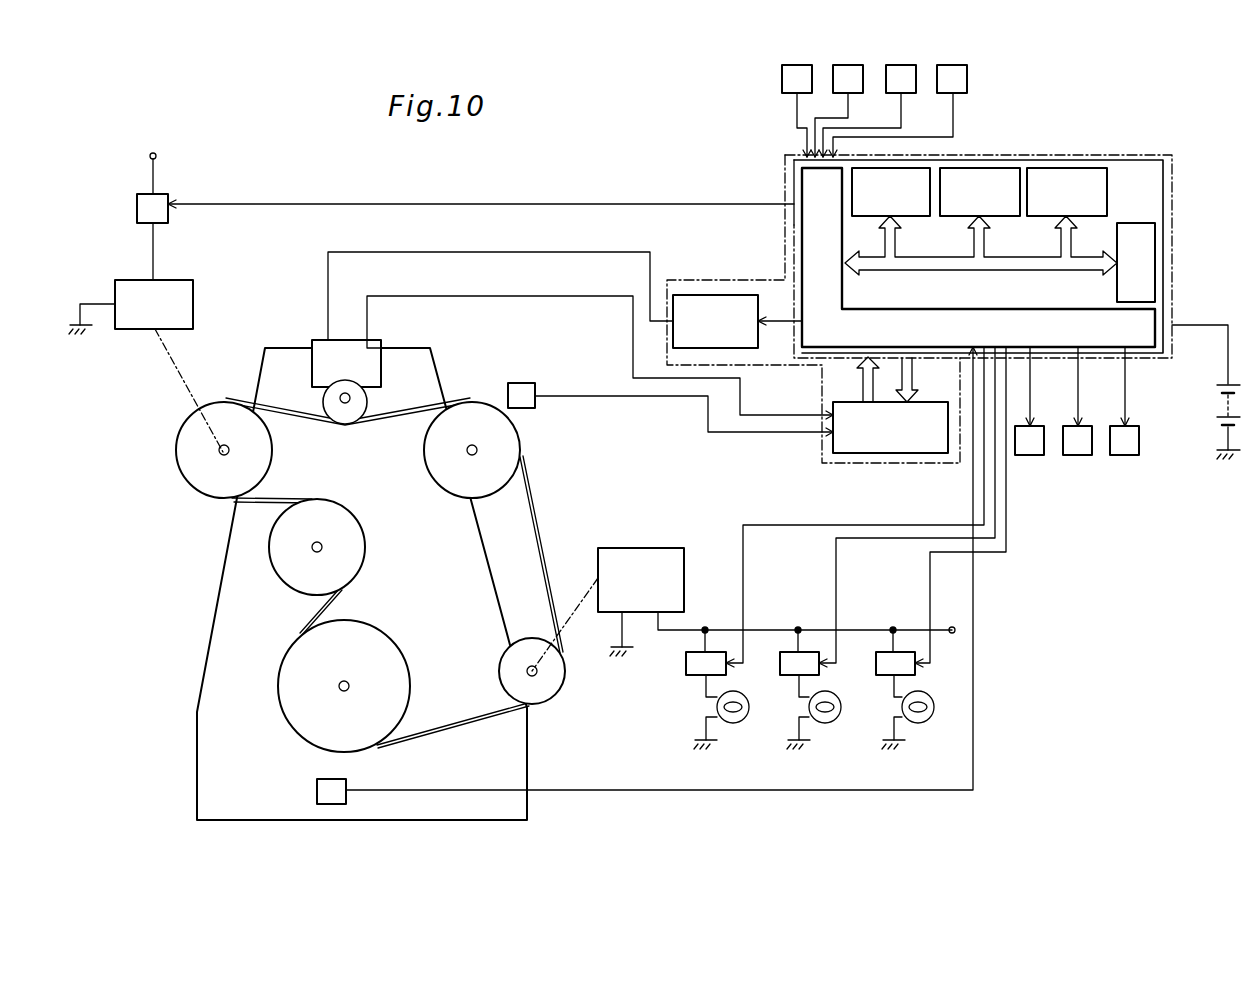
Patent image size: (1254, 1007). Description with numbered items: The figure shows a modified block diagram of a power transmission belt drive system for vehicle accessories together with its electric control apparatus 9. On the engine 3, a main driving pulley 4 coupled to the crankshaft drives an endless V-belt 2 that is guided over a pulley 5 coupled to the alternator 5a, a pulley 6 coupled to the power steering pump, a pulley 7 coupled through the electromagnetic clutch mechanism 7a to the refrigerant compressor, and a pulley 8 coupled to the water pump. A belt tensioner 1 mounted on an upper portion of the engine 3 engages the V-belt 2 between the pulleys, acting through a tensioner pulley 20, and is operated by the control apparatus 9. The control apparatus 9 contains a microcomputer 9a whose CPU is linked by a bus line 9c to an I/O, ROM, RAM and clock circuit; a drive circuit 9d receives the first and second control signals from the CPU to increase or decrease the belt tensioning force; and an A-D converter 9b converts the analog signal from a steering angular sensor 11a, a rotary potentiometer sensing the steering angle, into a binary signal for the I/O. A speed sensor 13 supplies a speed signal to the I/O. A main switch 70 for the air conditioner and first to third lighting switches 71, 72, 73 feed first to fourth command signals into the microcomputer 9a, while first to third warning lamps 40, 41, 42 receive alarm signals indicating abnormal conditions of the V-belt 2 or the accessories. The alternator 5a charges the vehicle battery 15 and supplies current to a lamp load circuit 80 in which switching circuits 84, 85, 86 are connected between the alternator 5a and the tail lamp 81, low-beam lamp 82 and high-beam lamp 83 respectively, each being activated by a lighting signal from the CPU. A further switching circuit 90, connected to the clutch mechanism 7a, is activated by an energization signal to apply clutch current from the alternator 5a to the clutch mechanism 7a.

The belt tensioner 1 is at (318, 338).
The endless transmission belt 2 is at (406, 424).
The vehicle engine 3 is at (212, 642).
The main driving pulley 4 is at (290, 707).
The pulley 5 is at (500, 666).
The alternator 5a is at (652, 590).
The pulley 6 is at (434, 470).
The pulley 7 is at (178, 448).
The electromagnetic clutch mechanism 7a is at (137, 329).
The pulley 8 is at (277, 564).
The electric control apparatus 9 is at (778, 182).
The microcomputer 9a is at (1050, 158).
The A-D converter 9b is at (916, 453).
The bus line 9c is at (1020, 271).
The drive circuit 9d is at (719, 295).
The steering angular sensor 11a is at (518, 383).
The speed sensor 13 is at (347, 790).
The vehicle battery 15 is at (1220, 428).
The tensioner pulley 20 is at (343, 418).
The first warning lamp 40 is at (1039, 451).
The second warning lamp 41 is at (1087, 451).
The third warning lamp 42 is at (1134, 451).
The main switch 70 is at (806, 89).
The first lighting switch 71 is at (857, 89).
The second lighting switch 72 is at (910, 89).
The third lighting switch 73 is at (961, 89).
The vehicle lamp load circuit 80 is at (668, 713).
The tail lamp 81 is at (747, 716).
The low-beam lamp 82 is at (839, 716).
The high-beam lamp 83 is at (932, 716).
The switching circuit 84 is at (686, 660).
The switching circuit 85 is at (780, 660).
The switching circuit 86 is at (876, 660).
The switching circuit 90 is at (163, 219).